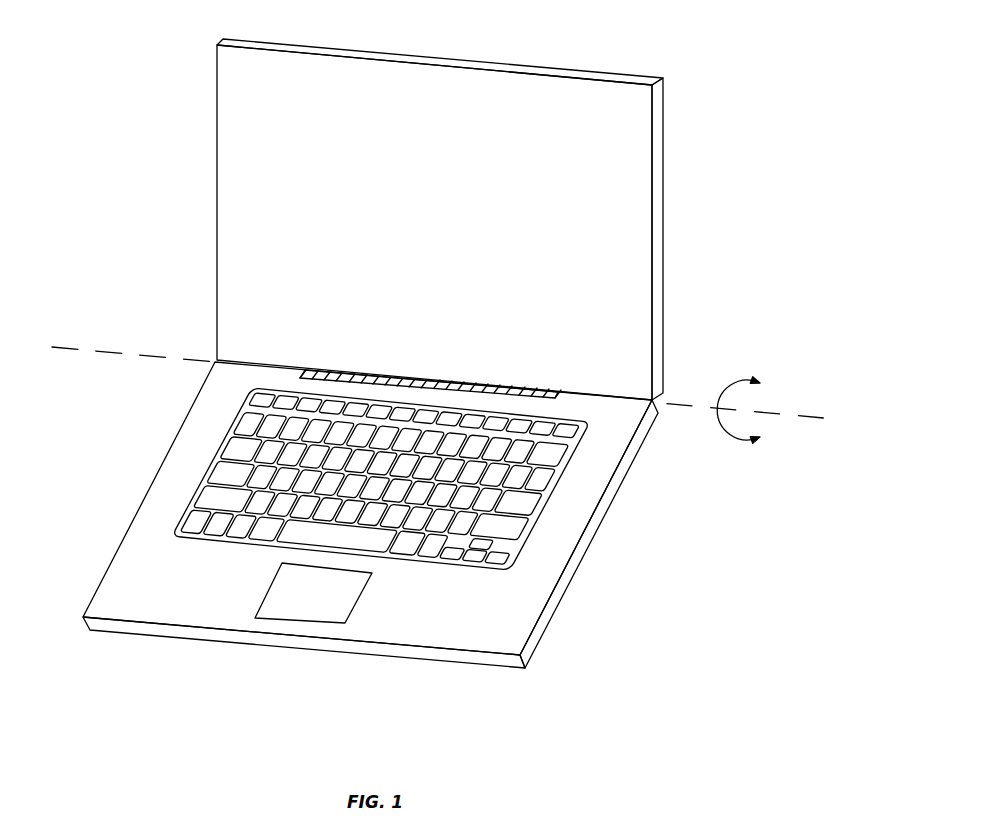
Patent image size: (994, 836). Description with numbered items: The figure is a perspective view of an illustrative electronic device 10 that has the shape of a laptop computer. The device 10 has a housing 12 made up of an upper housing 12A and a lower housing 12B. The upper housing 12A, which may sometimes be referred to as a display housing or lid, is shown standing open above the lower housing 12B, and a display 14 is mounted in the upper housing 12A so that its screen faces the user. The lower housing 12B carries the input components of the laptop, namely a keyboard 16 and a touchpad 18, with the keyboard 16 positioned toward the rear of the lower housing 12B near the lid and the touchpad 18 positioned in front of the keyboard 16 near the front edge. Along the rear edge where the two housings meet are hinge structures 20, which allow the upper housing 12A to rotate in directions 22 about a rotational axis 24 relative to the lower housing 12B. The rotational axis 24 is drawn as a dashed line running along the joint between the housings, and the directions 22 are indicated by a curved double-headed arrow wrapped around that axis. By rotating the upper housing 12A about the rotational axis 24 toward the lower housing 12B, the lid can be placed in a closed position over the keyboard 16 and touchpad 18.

The electronic device 10 is at (720, 48).
The housing 12 is at (663, 337).
The upper housing 12A is at (200, 360).
The lower housing 12B is at (203, 366).
The display 14 is at (573, 212).
The keyboard 16 is at (518, 495).
The touchpad 18 is at (358, 603).
The hinge structures 20 is at (533, 390).
The directions 22 is at (732, 442).
The rotational axis 24 is at (108, 350).